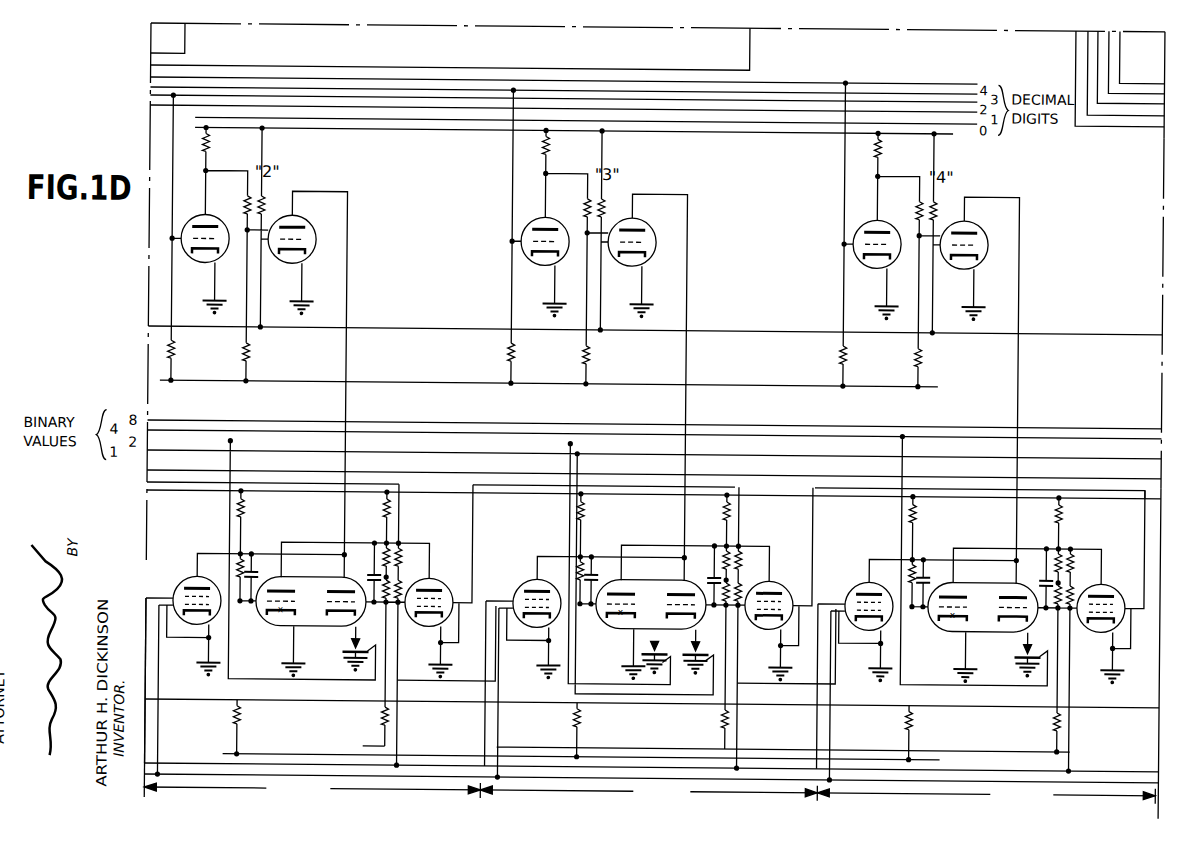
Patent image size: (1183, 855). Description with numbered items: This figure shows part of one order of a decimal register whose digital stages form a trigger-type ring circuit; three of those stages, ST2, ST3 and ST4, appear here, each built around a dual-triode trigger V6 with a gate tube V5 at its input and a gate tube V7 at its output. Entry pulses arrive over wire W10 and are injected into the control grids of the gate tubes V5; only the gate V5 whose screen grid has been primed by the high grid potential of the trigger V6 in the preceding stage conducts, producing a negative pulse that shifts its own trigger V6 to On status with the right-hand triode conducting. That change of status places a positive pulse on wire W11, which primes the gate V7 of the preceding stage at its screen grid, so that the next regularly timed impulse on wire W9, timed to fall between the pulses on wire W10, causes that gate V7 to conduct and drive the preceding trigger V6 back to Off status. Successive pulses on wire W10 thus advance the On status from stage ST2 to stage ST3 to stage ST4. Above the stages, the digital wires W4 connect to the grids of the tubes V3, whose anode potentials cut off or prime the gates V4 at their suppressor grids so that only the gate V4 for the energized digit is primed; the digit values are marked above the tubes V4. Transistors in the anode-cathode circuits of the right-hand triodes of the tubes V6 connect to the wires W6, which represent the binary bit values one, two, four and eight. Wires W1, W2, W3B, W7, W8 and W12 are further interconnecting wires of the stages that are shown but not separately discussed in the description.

The tube V3 is at (541, 228).
The gate V4 is at (635, 232).
The gate tube V5 is at (522, 593).
The trigger V6 is at (647, 596).
The gate V7 is at (768, 598).
The wire W1 is at (539, 485).
The wire W2 is at (415, 380).
The wire W3B is at (323, 753).
The digital wire W4 is at (445, 97).
The binary value wire W6 is at (234, 65).
The wire W7 is at (432, 326).
The wire W8 is at (480, 470).
The wire W9 is at (1074, 763).
The wire W10 is at (1092, 774).
The wire W11 is at (322, 490).
The wire W12 is at (224, 699).
The digital stage ST2 is at (312, 789).
The digital stage ST3 is at (648, 792).
The digital stage ST4 is at (986, 795).